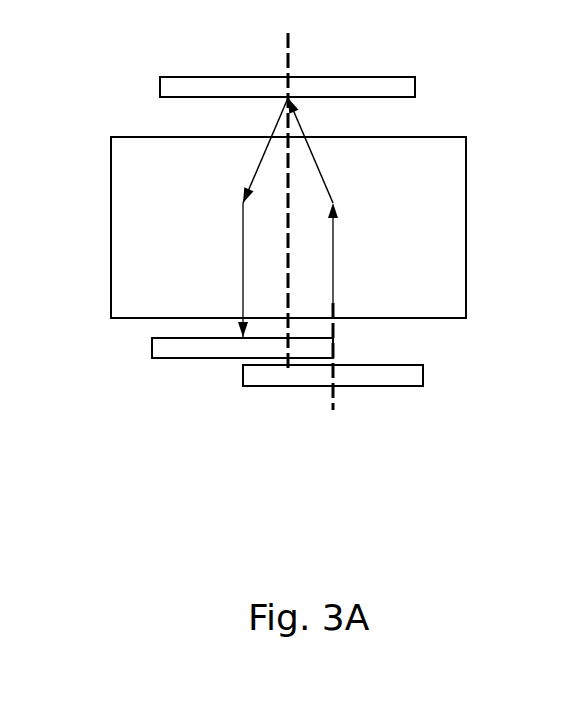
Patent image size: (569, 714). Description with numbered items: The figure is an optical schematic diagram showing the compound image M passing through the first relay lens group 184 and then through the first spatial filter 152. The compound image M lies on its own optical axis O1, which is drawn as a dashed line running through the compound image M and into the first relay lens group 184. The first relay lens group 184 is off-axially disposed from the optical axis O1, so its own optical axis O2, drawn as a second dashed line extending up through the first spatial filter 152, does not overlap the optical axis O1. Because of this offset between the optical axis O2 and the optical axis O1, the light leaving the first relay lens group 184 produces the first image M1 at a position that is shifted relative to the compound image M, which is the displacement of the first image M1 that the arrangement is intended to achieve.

The first spatial filter 152 is at (403, 87).
The first relay lens group 184 is at (435, 232).
The first image M1 is at (160, 346).
The compound image M is at (406, 375).
The optical axis of the compound image O1 is at (352, 398).
The optical axis of the first relay lens group O2 is at (305, 50).